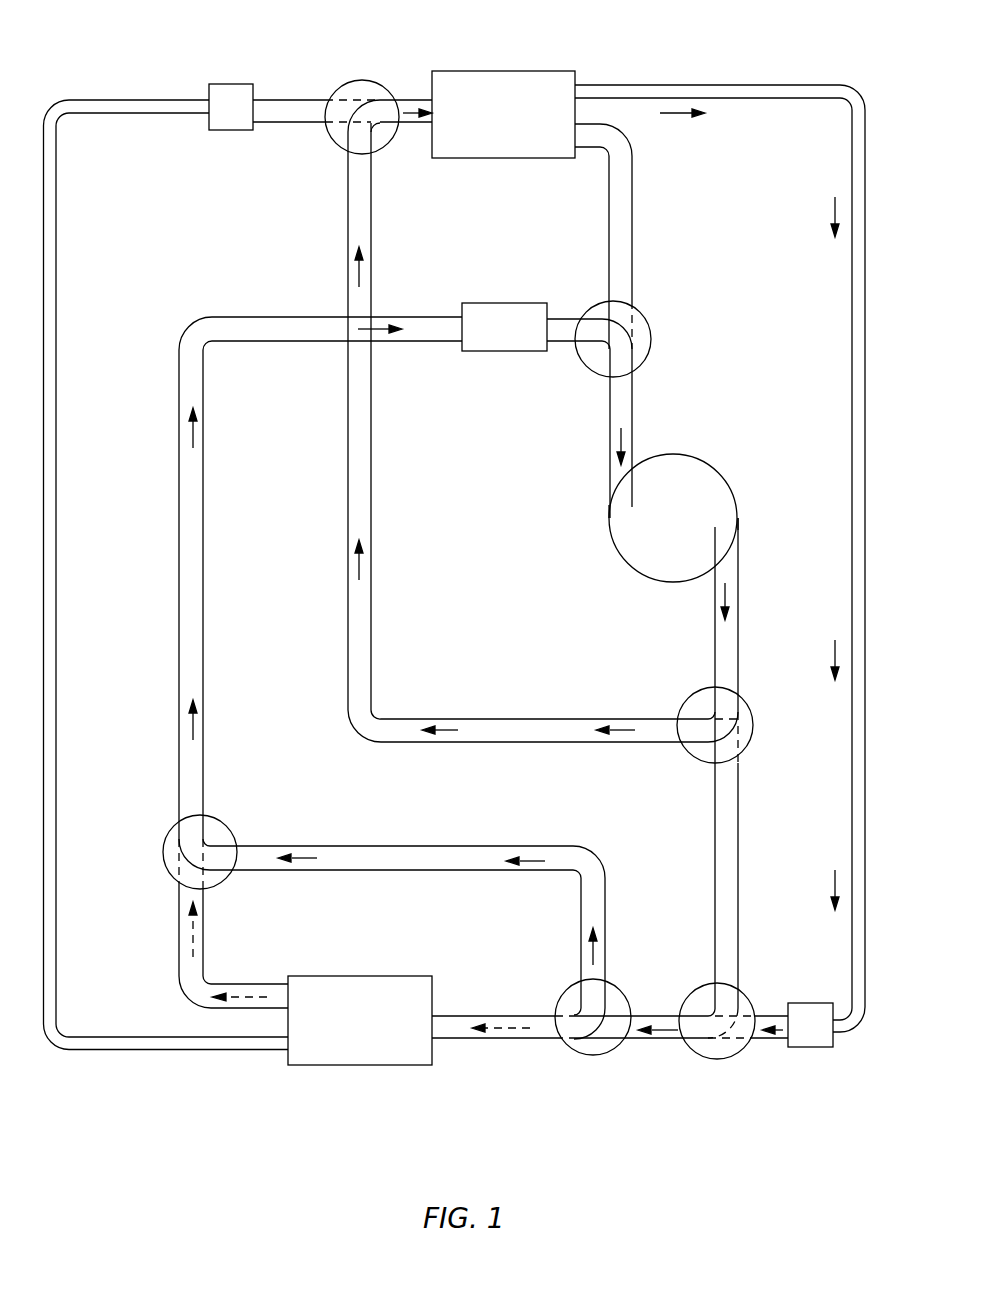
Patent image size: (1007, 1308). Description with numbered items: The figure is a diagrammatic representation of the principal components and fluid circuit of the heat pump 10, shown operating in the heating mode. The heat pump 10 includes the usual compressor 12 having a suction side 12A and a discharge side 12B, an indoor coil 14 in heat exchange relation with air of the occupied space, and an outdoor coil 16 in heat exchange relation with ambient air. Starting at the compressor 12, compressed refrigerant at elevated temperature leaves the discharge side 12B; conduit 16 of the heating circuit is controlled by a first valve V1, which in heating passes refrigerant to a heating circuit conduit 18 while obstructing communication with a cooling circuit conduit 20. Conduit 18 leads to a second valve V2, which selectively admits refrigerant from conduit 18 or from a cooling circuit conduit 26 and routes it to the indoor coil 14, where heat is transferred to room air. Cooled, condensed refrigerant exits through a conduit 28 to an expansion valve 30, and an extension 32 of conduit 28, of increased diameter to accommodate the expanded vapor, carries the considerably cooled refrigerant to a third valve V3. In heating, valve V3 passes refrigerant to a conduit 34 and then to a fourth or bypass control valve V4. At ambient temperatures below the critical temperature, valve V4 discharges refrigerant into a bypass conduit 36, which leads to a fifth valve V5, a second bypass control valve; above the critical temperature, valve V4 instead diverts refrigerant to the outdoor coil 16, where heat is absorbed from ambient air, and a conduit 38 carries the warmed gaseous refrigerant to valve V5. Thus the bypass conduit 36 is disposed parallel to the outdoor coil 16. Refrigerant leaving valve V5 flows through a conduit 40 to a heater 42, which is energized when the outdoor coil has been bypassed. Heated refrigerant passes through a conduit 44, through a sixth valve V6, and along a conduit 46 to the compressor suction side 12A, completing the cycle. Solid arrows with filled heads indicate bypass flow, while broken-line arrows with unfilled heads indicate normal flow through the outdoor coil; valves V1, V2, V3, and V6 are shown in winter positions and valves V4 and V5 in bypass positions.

The heat pump 10 is at (93, 36).
The compressor 12 is at (733, 483).
The suction side 12A is at (620, 524).
The discharge side 12B is at (730, 525).
The indoor coil 14 is at (487, 159).
The outdoor coil 16 is at (739, 647).
The heating circuit conduit 18 is at (523, 719).
The cooling circuit conduit 20 is at (741, 853).
The cooling circuit conduit 26 is at (276, 100).
The conduit 28 is at (853, 283).
The expansion valve 30 is at (829, 1050).
The extension of conduit 32 is at (758, 1042).
The conduit 34 is at (640, 1010).
The bypass conduit 36 is at (357, 846).
The conduit 38 is at (179, 915).
The conduit 40 is at (179, 560).
The heater 42 is at (504, 352).
The conduit 44 is at (590, 280).
The conduit 46 is at (636, 430).
The first valve V1 is at (753, 728).
The second valve V2 is at (335, 147).
The third valve V3 is at (748, 993).
The fourth or bypass control valve V4 is at (563, 1053).
The fifth valve V5 is at (164, 838).
The sixth valve V6 is at (648, 318).